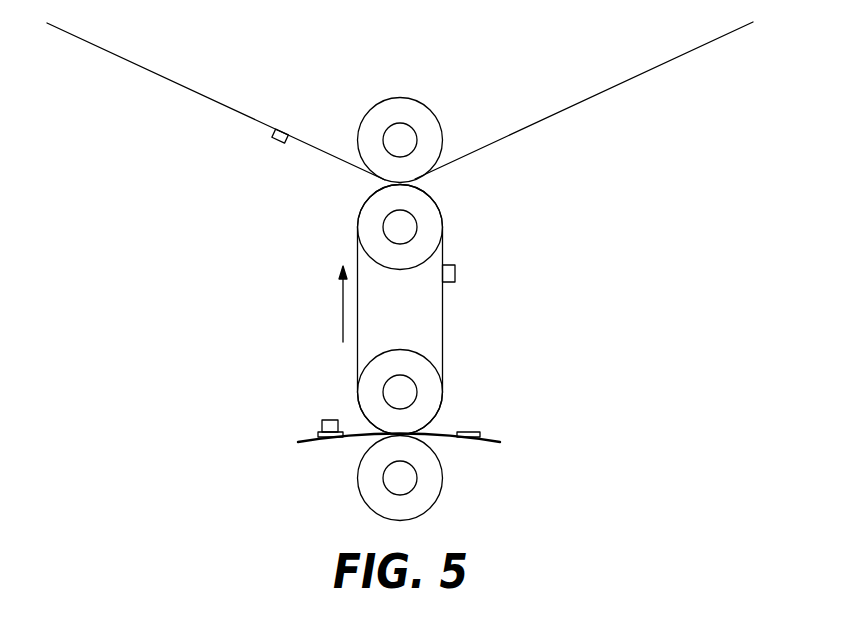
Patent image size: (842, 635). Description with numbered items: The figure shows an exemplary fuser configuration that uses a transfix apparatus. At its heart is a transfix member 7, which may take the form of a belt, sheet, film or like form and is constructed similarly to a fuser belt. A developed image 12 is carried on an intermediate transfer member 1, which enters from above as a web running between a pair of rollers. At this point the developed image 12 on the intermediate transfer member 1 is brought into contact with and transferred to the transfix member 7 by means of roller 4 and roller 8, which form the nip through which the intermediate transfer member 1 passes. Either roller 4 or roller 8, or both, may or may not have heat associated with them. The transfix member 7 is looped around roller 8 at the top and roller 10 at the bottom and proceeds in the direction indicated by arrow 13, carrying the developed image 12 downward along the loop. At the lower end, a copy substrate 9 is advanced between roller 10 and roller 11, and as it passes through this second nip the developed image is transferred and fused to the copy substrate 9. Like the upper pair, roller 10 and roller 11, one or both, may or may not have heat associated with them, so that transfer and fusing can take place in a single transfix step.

The intermediate transfer member 1 is at (215, 100).
The roller 4 is at (410, 98).
The transfix member 7 is at (442, 335).
The roller 8 is at (430, 222).
The copy substrate 9 is at (468, 427).
The roller 10 is at (433, 382).
The roller 11 is at (443, 477).
The developed image 12 is at (278, 150).
The arrow 13 is at (340, 308).